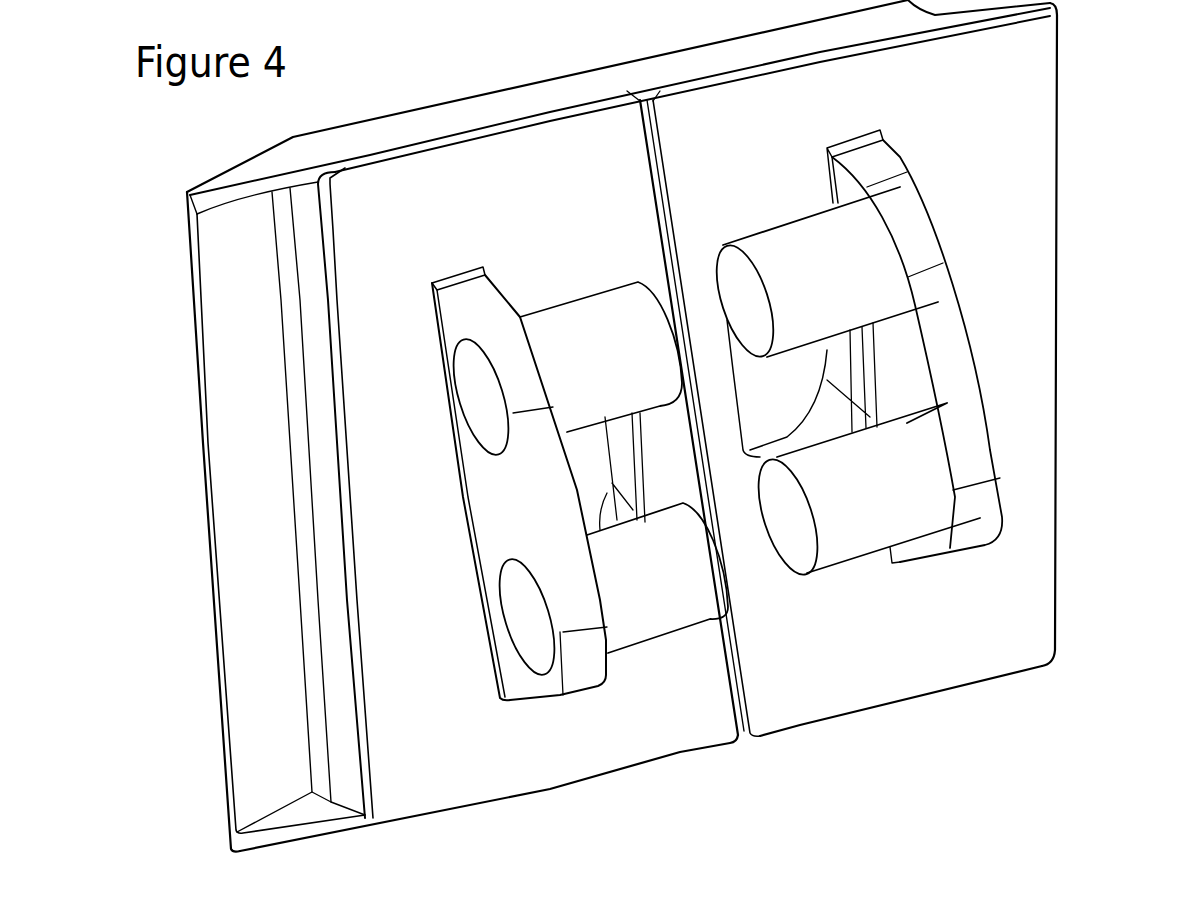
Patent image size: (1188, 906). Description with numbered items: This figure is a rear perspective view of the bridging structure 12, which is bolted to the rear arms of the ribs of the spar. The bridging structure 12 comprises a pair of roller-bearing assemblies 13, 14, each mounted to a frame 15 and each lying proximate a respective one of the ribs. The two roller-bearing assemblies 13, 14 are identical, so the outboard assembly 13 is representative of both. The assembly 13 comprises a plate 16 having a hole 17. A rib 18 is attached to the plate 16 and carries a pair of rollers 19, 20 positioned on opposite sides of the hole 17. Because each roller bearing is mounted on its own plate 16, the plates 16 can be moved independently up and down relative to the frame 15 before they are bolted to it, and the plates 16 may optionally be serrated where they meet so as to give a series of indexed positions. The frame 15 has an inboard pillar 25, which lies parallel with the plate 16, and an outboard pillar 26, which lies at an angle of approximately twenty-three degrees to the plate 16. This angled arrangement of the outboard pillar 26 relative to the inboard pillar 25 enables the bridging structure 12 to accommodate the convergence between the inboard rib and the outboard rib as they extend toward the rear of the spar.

The bridging structure 12 is at (1073, 533).
The roller-bearing assembly 13 is at (692, 715).
The roller-bearing assembly 14 is at (875, 616).
The frame 15 is at (190, 263).
The plate 16 is at (483, 213).
The hole 17 is at (590, 453).
The rib 18 is at (505, 505).
The roller 19 is at (662, 603).
The roller 20 is at (562, 327).
The inboard pillar 25 is at (977, 7).
The outboard pillar 26 is at (278, 634).